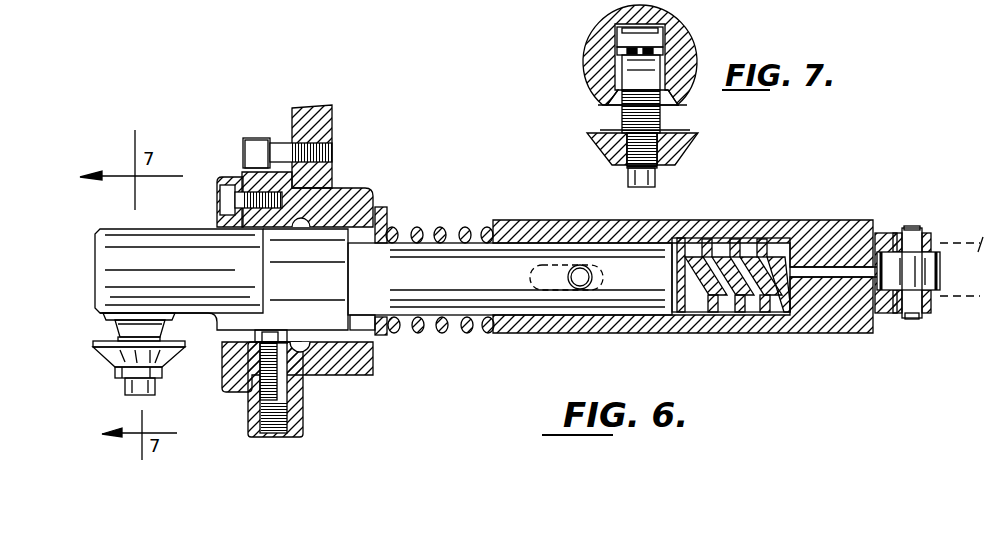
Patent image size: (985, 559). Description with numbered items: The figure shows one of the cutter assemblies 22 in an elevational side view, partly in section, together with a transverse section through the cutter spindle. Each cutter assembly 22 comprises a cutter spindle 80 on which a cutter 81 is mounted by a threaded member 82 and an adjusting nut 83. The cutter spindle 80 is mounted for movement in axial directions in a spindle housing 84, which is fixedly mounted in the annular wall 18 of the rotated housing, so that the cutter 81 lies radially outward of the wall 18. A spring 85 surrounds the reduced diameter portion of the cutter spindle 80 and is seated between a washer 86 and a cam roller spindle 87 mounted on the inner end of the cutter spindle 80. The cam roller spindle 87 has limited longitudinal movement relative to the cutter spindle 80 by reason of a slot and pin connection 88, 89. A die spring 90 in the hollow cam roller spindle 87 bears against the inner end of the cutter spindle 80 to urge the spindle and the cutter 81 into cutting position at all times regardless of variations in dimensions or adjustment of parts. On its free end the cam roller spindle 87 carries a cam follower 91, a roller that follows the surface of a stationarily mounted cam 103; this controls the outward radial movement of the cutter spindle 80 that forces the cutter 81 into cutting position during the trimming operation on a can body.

In FIG. 6, the wall 18 is at (327, 133).
In FIG. 6, the cutter assembly 22 is at (575, 339).
In FIG. 6, the cutter spindle 80 is at (613, 243).
In FIG. 7, the cutter spindle 80 is at (672, 33).
In FIG. 6, the cutter 81 is at (170, 365).
In FIG. 7, the cutter 81 is at (617, 148).
In FIG. 6, the threaded member 82 is at (117, 338).
In FIG. 7, the threaded member 82 is at (667, 123).
In FIG. 6, the adjusting nut 83 is at (108, 328).
In FIG. 7, the adjusting nut 83 is at (610, 108).
In FIG. 6, the spindle housing 84 is at (342, 204).
In FIG. 6, the spring 85 is at (446, 229).
In FIG. 6, the washer 86 is at (383, 217).
In FIG. 6, the cam roller spindle 87 is at (750, 226).
In FIG. 6, the slot 88 is at (528, 266).
In FIG. 6, the pin 89 is at (594, 274).
In FIG. 6, the die spring 90 is at (712, 240).
In FIG. 6, the cam follower 91 is at (902, 287).
In FIG. 6, the cam 103 is at (961, 248).